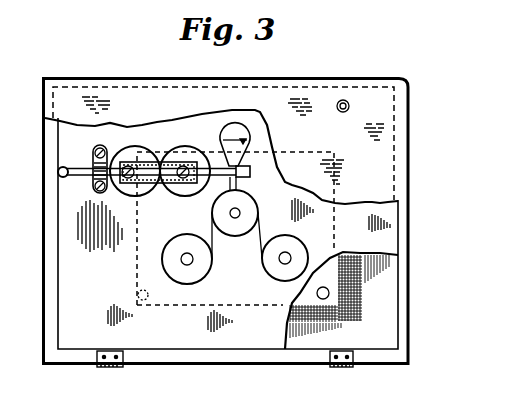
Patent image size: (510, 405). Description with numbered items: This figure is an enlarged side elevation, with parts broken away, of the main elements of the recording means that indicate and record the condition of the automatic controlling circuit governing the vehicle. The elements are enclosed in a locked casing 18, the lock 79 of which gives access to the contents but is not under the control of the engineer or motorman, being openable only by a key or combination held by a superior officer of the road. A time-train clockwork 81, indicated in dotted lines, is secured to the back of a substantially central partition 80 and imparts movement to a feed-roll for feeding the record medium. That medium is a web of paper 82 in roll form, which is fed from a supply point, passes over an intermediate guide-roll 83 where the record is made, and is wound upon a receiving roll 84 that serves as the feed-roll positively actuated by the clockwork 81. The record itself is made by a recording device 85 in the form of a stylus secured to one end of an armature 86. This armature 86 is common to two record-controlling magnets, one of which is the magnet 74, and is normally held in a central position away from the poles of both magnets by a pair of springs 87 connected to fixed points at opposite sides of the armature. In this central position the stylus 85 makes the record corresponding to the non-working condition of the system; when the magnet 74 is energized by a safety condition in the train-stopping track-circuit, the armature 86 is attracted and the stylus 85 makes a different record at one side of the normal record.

The casing 18 is at (408, 162).
The magnet 74 is at (133, 228).
The lock 79 is at (347, 101).
The central partition 80 is at (221, 209).
The clockwork 81 is at (338, 309).
The web of paper 82 is at (249, 224).
The guide-roll 83 is at (238, 237).
The receiving roll 84 is at (296, 243).
The recording device 85 is at (222, 144).
The armature 86 is at (250, 172).
The springs 87 is at (63, 166).